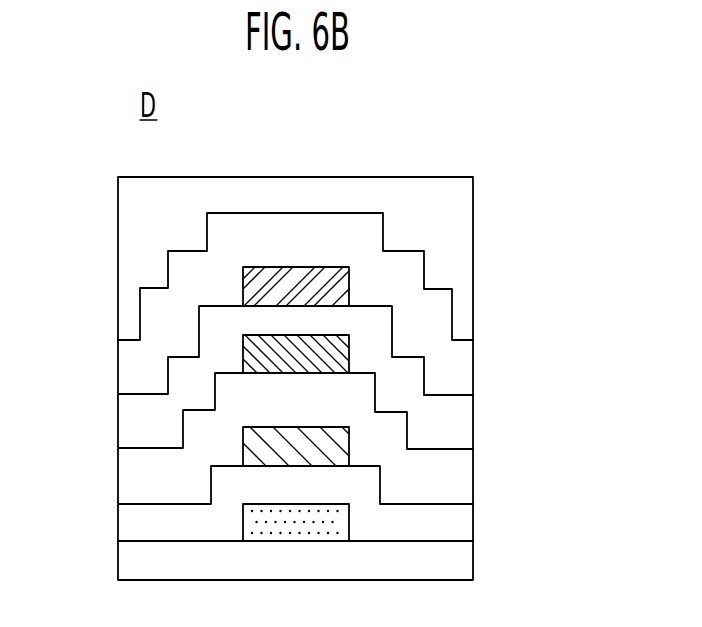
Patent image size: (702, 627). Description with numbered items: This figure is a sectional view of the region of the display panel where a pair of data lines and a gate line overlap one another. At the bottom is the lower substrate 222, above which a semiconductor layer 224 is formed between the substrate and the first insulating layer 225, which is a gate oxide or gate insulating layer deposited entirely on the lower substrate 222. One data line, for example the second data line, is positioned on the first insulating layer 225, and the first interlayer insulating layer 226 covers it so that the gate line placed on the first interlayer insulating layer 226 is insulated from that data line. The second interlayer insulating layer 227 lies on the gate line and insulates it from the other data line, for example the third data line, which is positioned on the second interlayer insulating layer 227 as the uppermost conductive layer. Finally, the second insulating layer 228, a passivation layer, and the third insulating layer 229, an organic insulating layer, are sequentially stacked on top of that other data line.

The third insulating layer 229 is at (121, 263).
The second insulating layer 228 is at (121, 370).
The second interlayer insulating layer 227 is at (121, 423).
The first interlayer insulating layer 226 is at (121, 473).
The first insulating layer 225 is at (121, 522).
The semiconductor layer 224 is at (335, 522).
The lower substrate 222 is at (121, 568).